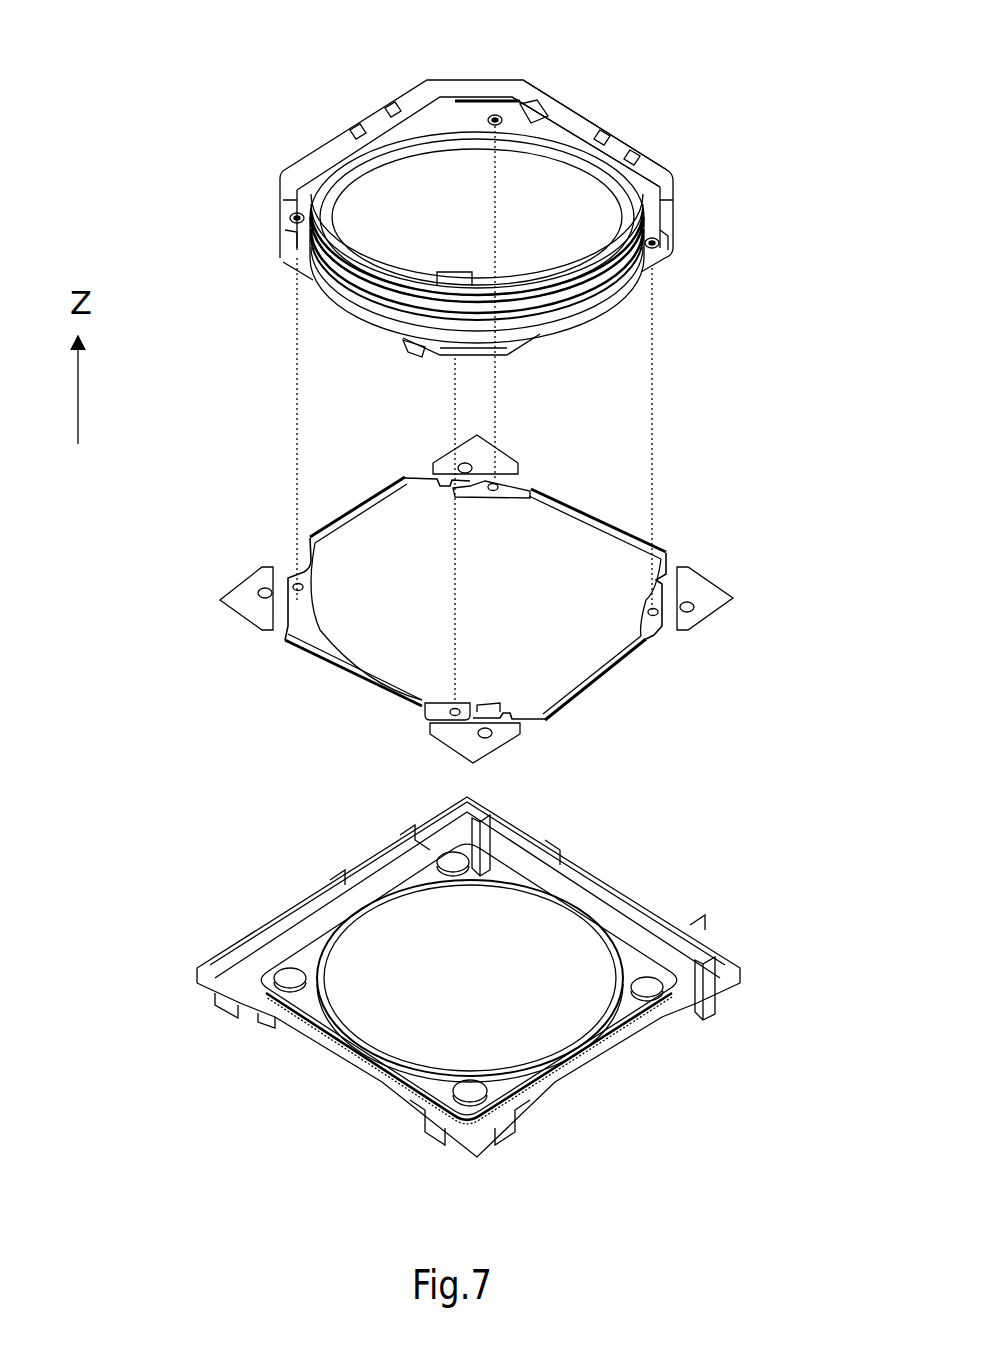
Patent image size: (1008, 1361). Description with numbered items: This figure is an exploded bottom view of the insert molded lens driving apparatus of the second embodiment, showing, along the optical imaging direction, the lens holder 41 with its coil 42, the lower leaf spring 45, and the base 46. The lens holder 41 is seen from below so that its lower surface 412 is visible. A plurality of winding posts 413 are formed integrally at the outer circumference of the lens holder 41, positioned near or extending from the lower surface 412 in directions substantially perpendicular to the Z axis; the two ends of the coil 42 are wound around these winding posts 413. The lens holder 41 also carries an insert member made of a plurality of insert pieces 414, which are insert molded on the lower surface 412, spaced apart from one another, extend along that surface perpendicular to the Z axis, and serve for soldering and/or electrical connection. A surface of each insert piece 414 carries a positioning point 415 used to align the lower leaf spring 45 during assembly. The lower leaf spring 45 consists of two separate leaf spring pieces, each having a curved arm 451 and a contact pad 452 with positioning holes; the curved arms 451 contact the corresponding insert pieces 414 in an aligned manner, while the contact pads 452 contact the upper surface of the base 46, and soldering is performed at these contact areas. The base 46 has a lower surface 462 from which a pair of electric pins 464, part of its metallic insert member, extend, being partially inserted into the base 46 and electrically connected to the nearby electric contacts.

The lens holder 41 is at (672, 82).
The coil 42 is at (643, 168).
The lower surface 412 is at (665, 216).
The winding posts 413 is at (538, 108).
The insert pieces 414 is at (460, 122).
The positioning point 415 is at (289, 207).
The lower leaf spring 45 is at (709, 504).
The curved arm 451 is at (510, 493).
The contact pad 452 is at (475, 447).
The base 46 is at (726, 842).
The lower surface 462 is at (628, 1005).
The electric pins 464 is at (478, 852).